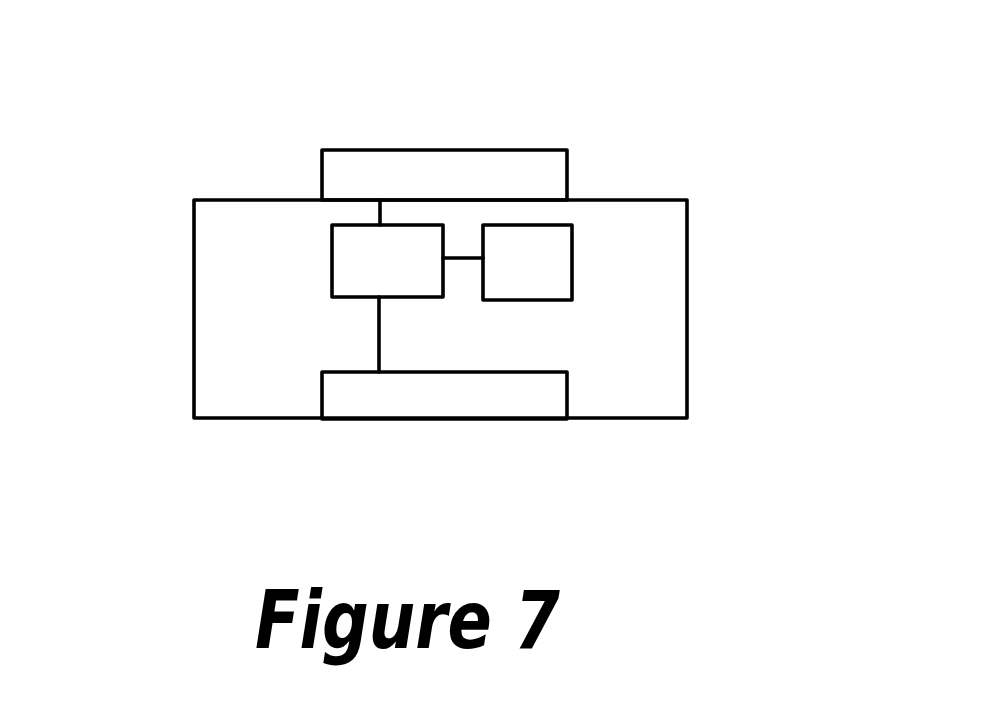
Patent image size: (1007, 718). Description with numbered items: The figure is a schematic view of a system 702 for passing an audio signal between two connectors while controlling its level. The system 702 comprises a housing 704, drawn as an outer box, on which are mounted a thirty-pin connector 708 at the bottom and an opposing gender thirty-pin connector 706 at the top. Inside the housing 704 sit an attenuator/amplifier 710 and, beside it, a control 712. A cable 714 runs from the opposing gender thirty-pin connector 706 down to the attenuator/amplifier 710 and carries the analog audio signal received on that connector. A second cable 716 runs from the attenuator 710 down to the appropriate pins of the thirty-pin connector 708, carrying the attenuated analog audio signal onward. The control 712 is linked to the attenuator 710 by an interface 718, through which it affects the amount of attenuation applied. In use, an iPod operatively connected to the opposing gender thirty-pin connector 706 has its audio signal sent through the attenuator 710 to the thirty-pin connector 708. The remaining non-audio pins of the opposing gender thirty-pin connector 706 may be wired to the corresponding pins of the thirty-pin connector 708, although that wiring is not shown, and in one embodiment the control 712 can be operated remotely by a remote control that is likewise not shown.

The system 702 is at (722, 160).
The housing 704 is at (194, 277).
The opposing gender 30-pin connector 706 is at (445, 150).
The 30-pin connector 708 is at (459, 420).
The attenuator/amplifier 710 is at (387, 261).
The control 712 is at (527, 262).
The cable 714 is at (376, 211).
The cable 716 is at (365, 328).
The interface 718 is at (453, 263).